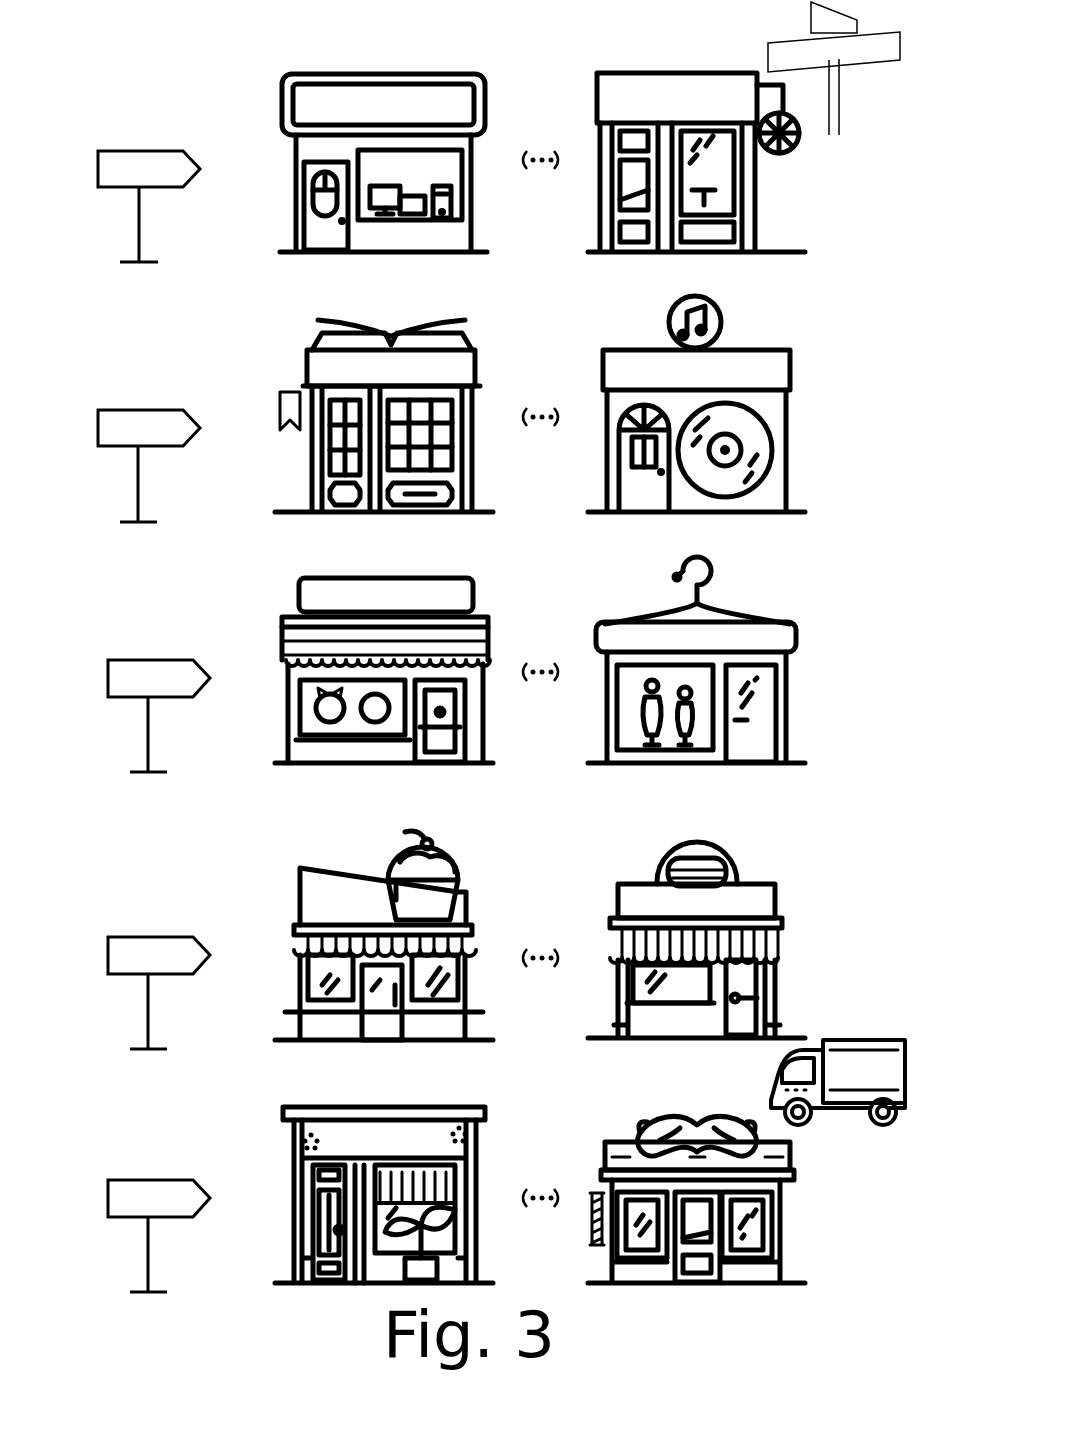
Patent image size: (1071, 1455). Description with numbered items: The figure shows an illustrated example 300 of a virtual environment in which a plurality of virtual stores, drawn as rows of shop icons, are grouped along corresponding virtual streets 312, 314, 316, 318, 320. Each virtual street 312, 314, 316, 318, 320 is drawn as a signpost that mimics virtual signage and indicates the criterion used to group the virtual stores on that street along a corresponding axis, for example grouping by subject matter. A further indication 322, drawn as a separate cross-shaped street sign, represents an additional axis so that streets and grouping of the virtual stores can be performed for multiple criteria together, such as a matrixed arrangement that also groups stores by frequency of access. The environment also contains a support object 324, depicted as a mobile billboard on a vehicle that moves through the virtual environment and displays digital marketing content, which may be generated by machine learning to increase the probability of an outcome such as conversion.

The illustrated example 300 is at (155, 58).
The virtual street 312 is at (140, 148).
The virtual street 314 is at (138, 400).
The virtual street 316 is at (148, 655).
The virtual street 318 is at (148, 930).
The virtual street 320 is at (148, 1178).
The indication 322 is at (832, 130).
The support object 324 is at (772, 1088).